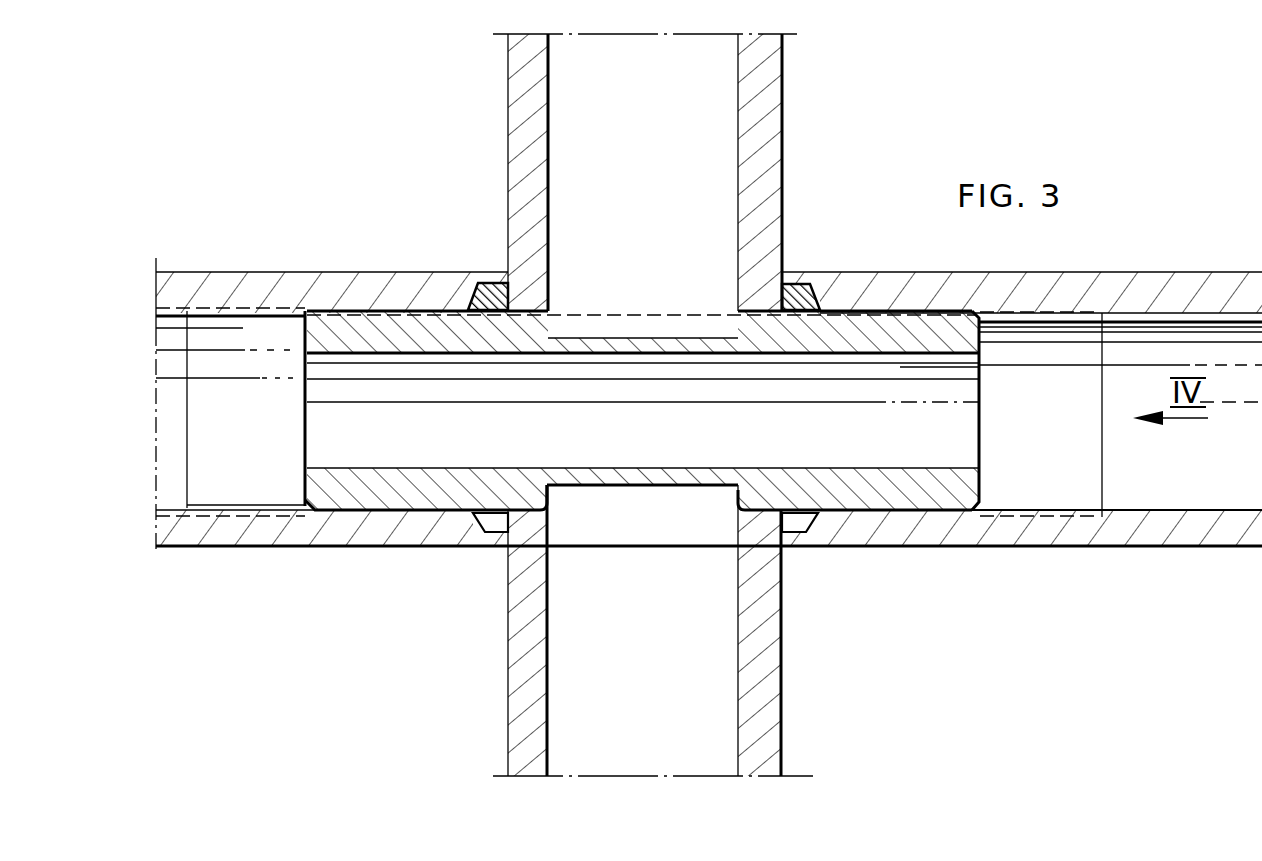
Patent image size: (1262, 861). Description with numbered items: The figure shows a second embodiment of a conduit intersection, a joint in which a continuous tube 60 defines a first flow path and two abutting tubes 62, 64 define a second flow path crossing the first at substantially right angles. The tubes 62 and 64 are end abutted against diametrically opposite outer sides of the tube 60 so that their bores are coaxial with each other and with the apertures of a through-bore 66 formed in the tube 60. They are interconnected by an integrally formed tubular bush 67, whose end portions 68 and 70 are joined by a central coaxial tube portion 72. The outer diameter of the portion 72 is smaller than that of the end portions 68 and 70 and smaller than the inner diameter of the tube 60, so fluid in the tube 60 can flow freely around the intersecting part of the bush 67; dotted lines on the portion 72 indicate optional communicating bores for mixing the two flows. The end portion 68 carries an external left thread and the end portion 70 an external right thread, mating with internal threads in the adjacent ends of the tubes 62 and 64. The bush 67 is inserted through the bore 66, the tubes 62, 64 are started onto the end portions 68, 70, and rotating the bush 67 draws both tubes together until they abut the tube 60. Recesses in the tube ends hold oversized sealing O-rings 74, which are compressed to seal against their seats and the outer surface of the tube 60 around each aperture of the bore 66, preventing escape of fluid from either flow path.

The continuous tube 60 is at (767, 168).
The abutting tube 62 is at (383, 288).
The abutting tube 64 is at (1113, 537).
The through-bore 66 is at (740, 305).
The tubular bush 67 is at (348, 445).
The bush end portion 68 is at (470, 490).
The bush end portion 70 is at (930, 488).
The central coaxial tube portion 72 is at (664, 487).
The sealing O-ring 74 is at (497, 290).